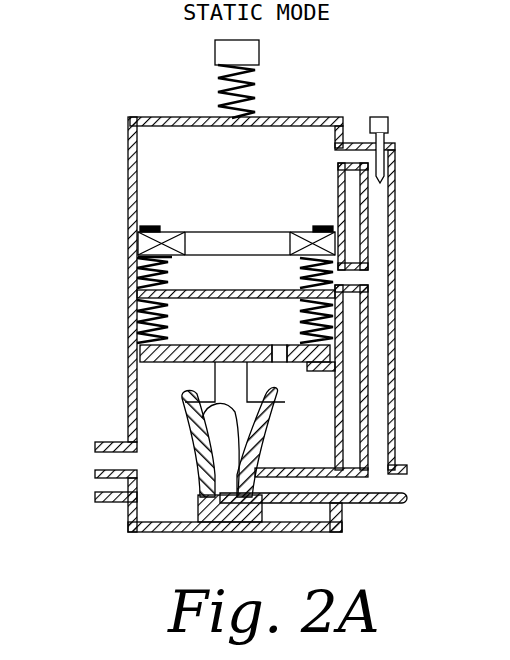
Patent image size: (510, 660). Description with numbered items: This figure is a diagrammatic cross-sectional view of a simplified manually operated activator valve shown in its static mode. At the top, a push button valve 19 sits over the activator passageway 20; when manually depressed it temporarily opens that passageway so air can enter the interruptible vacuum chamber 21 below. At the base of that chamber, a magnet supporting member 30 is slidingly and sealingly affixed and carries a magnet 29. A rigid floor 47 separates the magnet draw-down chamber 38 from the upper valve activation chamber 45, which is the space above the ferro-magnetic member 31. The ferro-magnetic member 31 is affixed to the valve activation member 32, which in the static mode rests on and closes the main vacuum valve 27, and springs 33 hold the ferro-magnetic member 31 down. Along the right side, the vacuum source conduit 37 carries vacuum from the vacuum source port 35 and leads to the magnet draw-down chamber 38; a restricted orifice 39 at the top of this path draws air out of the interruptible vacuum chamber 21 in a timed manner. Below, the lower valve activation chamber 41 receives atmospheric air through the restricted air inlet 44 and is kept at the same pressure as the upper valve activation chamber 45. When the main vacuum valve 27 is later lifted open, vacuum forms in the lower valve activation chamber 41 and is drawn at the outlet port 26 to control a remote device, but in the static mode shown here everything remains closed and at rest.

The push button valve 19 is at (262, 57).
The activator passageway 20 is at (232, 122).
The interruptible vacuum chamber 21 is at (183, 148).
The outlet port 26 is at (103, 493).
The main vacuum valve 27 is at (232, 470).
The magnet 29 is at (325, 245).
The magnet supporting member 30 is at (217, 230).
The ferro-magnetic member 31 is at (308, 358).
The valve activation member 32 is at (232, 380).
The springs 33 is at (330, 308).
The vacuum source port 35 is at (402, 491).
The vacuum source conduit 37 is at (350, 158).
The magnet draw-down chamber 38 is at (205, 282).
The restricted orifice 39 is at (390, 172).
The lower valve activation chamber 41 is at (165, 497).
The restricted air inlet 44 is at (100, 448).
The upper valve activation chamber 45 is at (160, 346).
The rigid floor 47 is at (262, 288).